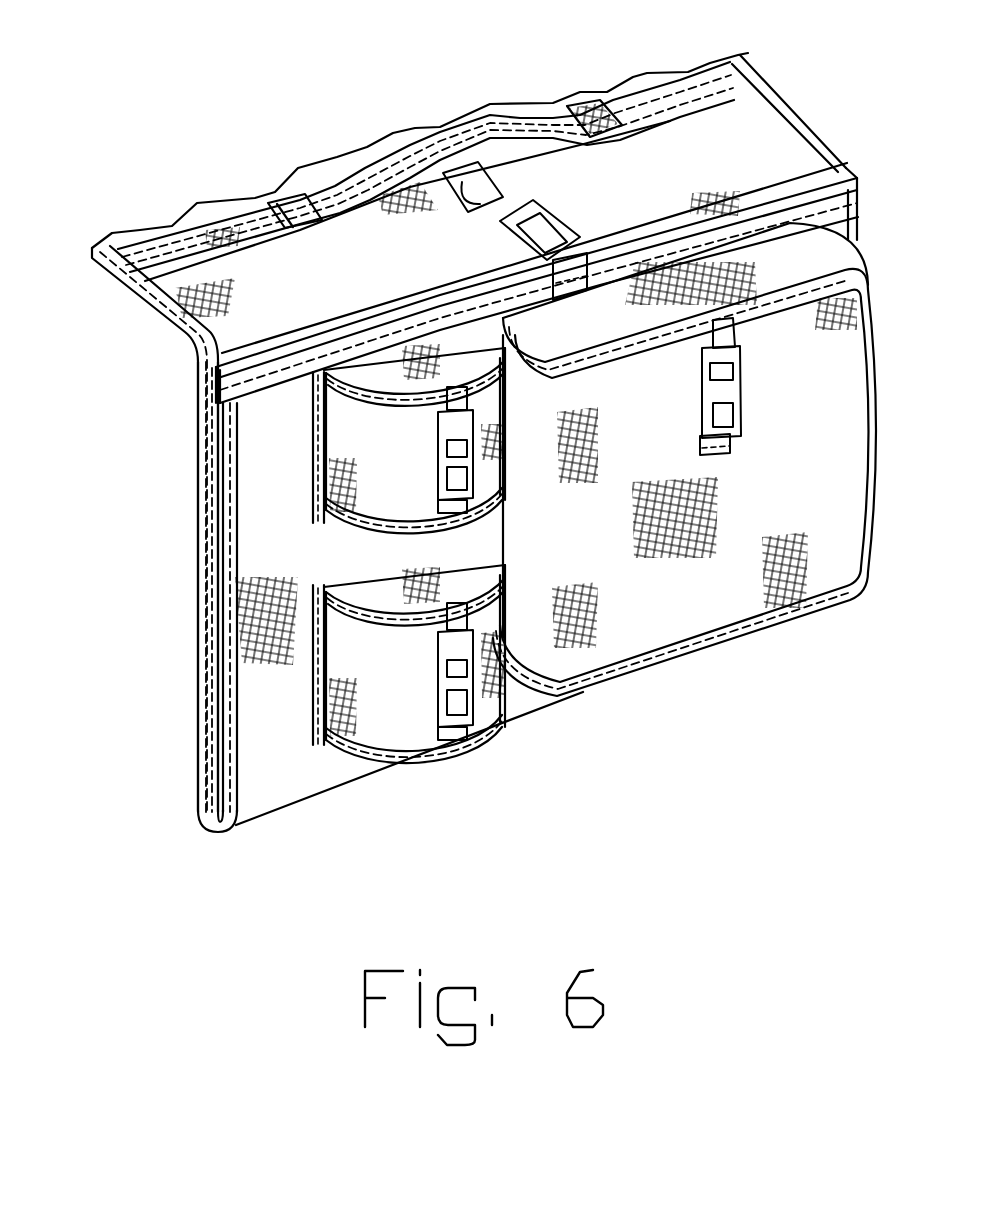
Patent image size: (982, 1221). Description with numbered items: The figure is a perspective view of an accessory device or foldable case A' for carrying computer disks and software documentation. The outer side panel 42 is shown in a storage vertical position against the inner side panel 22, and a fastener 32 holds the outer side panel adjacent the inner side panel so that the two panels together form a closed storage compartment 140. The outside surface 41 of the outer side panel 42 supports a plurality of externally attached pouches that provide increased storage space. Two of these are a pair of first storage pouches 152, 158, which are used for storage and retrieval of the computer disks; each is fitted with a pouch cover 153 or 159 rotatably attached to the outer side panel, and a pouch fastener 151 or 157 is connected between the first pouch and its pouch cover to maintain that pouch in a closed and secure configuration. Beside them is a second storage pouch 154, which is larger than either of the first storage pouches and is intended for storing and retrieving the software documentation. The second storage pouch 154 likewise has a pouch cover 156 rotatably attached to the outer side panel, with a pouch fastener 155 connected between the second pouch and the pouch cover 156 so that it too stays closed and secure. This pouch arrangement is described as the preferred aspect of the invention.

The foldable case A' is at (469, 409).
The fastener 32 is at (552, 205).
The closed storage compartment 140 is at (480, 536).
The inner side panel 22 is at (212, 683).
The outside surface 41 is at (403, 654).
The outer side panel 42 is at (277, 777).
The pouch fastener 151 is at (377, 456).
The first storage pouch 152 is at (380, 512).
The pouch cover 153 is at (373, 375).
The second storage pouch 154 is at (684, 473).
The pouch fastener 155 is at (750, 385).
The pouch cover 156 is at (613, 320).
The pouch fastener 157 is at (379, 710).
The first storage pouch 158 is at (397, 738).
The pouch cover 159 is at (372, 597).